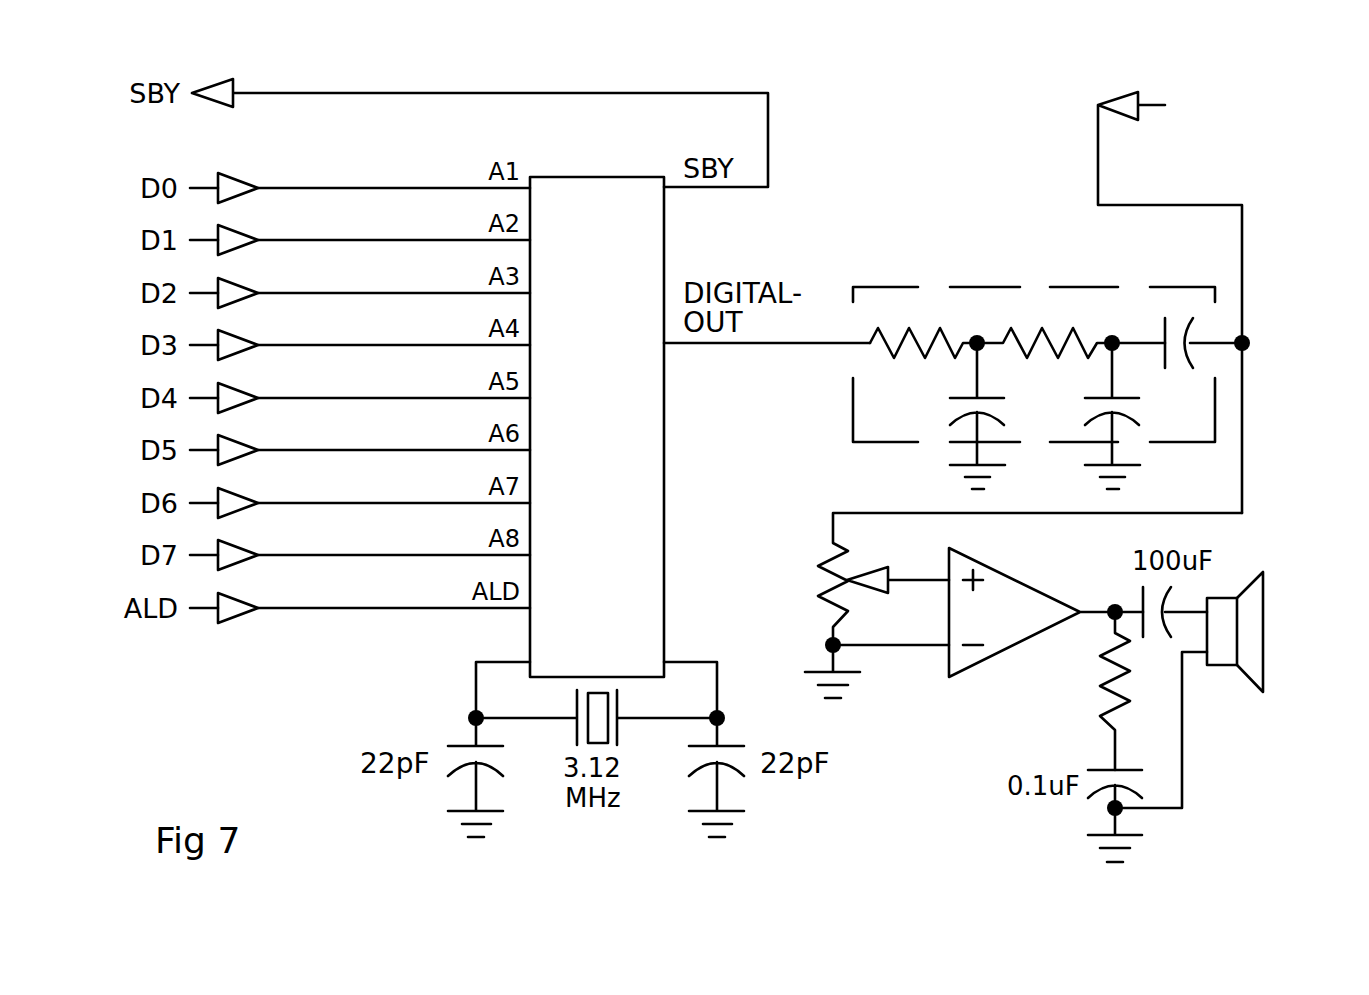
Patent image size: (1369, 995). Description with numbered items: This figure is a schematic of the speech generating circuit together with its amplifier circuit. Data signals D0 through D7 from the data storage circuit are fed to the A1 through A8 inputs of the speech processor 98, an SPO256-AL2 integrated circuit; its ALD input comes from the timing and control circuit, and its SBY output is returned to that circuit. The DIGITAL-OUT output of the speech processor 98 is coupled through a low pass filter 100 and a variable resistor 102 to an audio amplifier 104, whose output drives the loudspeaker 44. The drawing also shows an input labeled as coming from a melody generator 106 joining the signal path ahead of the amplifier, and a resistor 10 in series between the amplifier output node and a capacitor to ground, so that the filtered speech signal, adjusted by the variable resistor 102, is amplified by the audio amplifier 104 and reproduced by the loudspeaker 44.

The speech processor 98 is at (583, 177).
The low pass filter 100 is at (1060, 287).
The variable resistor 102 is at (828, 608).
The audio amplifier 104 is at (1013, 573).
The melody generator input 106 is at (1206, 291).
The loudspeaker 44 is at (1267, 635).
The resistor 10 is at (1096, 691).